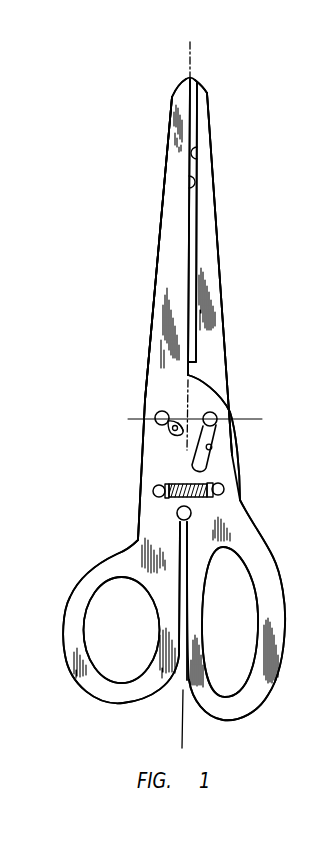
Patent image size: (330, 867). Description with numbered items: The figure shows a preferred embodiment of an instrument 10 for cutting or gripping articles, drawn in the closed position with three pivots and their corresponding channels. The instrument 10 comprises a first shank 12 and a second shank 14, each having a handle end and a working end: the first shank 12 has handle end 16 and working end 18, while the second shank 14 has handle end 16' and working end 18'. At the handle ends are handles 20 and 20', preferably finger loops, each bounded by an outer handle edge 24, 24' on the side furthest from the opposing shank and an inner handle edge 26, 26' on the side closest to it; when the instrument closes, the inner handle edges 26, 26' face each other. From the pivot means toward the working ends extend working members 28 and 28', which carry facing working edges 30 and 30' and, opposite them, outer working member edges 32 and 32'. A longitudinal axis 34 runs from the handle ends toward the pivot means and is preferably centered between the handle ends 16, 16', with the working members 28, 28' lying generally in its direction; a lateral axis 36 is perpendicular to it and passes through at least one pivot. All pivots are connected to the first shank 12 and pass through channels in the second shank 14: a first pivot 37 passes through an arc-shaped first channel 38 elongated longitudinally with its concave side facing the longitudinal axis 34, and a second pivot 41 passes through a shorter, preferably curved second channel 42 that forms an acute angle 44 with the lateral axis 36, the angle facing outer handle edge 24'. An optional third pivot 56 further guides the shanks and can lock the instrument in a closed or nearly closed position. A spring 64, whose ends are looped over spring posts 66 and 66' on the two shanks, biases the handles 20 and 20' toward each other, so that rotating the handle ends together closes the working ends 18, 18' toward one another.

The instrument 10 is at (242, 242).
The first shank 12 is at (150, 457).
The second shank 14 is at (236, 456).
The handle end 16 is at (121, 661).
The handle end 16' is at (237, 650).
The working end 18 is at (223, 89).
The working end 18' is at (162, 77).
The handle 20 is at (94, 630).
The handle 20' is at (259, 622).
The outer handle edge 24 is at (104, 498).
The outer handle edge 24' is at (279, 528).
The inner handle edge 26 is at (163, 627).
The inner handle edge 26' is at (112, 601).
The working member 28 is at (225, 268).
The working member 28' is at (153, 239).
The working edge 30 is at (219, 146).
The working edge 30' is at (154, 170).
The outer working member edge 32 is at (235, 274).
The outer working member edge 32' is at (139, 248).
The longitudinal axis 34 is at (192, 50).
The lateral axis 36 is at (262, 419).
The first pivot 37 is at (214, 415).
The first channel 38 is at (213, 447).
The second pivot 41 is at (157, 413).
The second channel 42 is at (168, 430).
The acute angle 44 is at (182, 422).
The third pivot 56 is at (177, 516).
The spring 64 is at (200, 500).
The spring post 66 is at (130, 481).
The spring post 66' is at (246, 474).